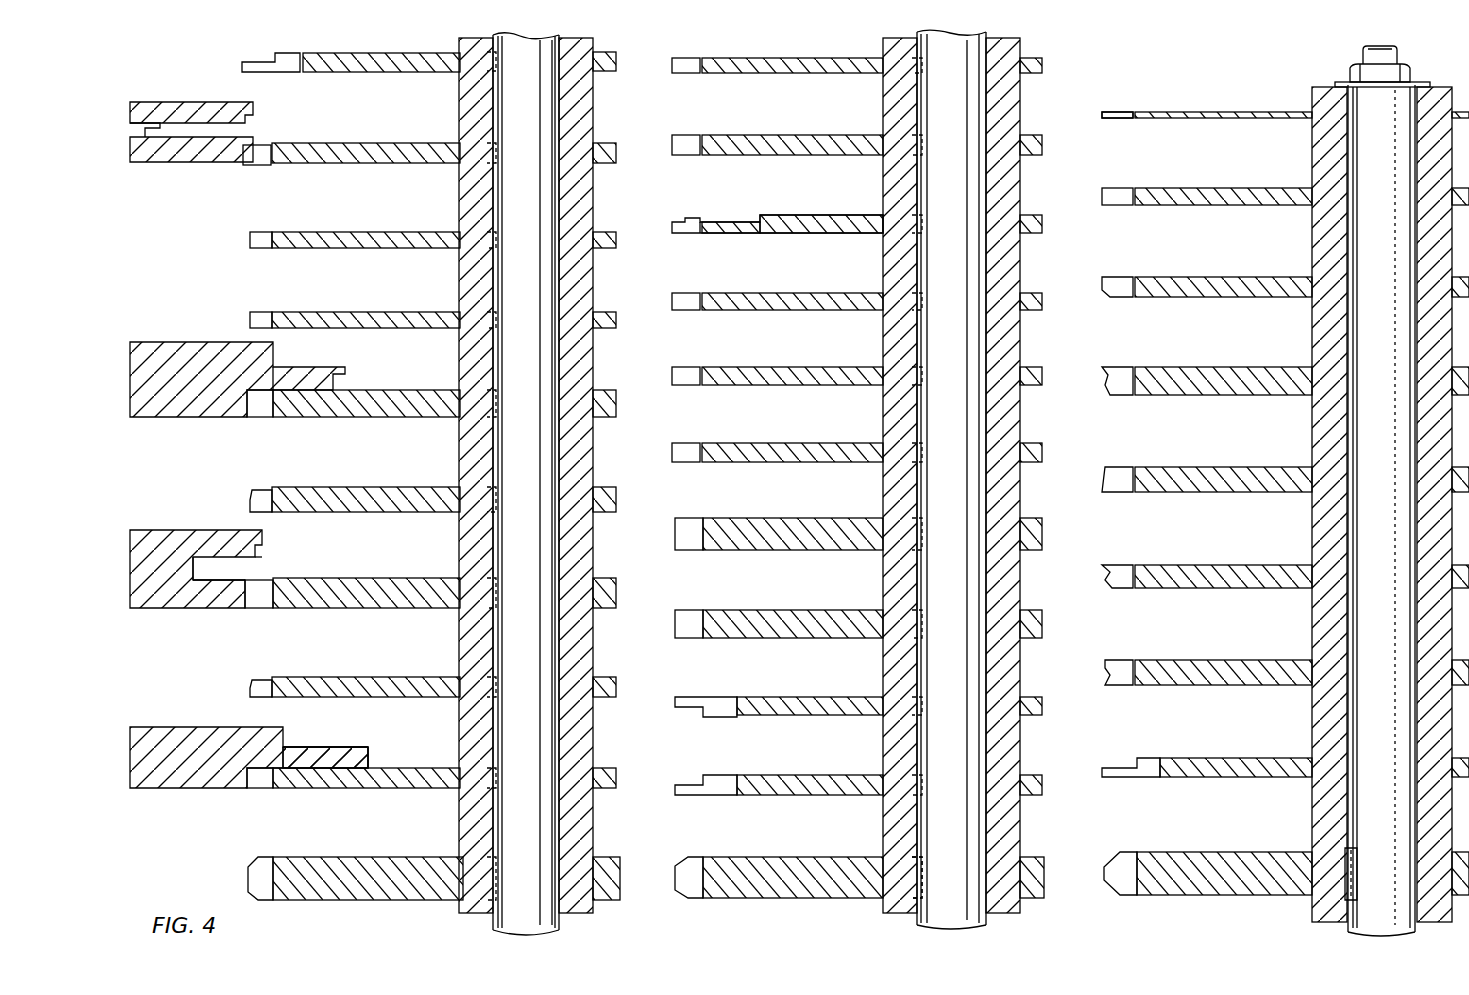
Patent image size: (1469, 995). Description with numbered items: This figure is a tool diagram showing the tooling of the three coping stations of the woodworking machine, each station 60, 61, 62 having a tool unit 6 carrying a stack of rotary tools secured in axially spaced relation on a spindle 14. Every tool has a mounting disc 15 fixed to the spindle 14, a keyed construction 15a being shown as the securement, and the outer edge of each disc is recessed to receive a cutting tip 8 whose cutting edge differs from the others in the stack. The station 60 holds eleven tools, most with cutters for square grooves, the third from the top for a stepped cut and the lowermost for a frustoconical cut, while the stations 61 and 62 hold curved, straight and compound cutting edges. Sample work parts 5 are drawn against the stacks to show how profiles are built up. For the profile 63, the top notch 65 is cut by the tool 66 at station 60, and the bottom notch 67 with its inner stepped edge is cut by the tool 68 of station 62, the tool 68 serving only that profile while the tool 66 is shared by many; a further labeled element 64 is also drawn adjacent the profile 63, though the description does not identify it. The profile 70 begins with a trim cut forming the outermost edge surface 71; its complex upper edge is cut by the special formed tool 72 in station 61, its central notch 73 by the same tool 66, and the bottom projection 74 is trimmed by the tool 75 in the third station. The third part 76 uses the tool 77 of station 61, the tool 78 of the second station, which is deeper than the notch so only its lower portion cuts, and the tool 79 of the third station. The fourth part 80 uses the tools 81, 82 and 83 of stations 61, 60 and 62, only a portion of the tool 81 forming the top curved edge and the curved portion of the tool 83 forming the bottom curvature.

The work part 5 is at (190, 405).
The tool unit 6 is at (230, 72).
The cutting tip 8 is at (1122, 122).
The spindle 14 is at (1397, 47).
The mounting disc 15 is at (1252, 152).
The keyed construction 15a is at (925, 690).
The tool station 60 is at (1018, 481).
The tool station 61 is at (1285, 485).
The tool station 62 is at (375, 485).
The profile 63 is at (420, 725).
The spacer ring 64 is at (368, 757).
The top notch 65 is at (345, 725).
The tool 66 is at (832, 133).
The bottom notch 67 is at (292, 788).
The tool 68 is at (383, 788).
The profile 70 is at (232, 528).
The outermost edge surface 71 is at (262, 558).
The special formed tool 72 is at (1216, 533).
The central notch 73 is at (238, 571).
The bottom projection 74 is at (235, 608).
The tool 75 is at (345, 610).
The third part 76 is at (212, 340).
The tool 77 is at (1240, 88).
The tool 78 is at (822, 490).
The tool 79 is at (432, 390).
The fourth part 80 is at (200, 160).
The tool 81 is at (1168, 298).
The tool 82 is at (790, 238).
The tool 83 is at (345, 165).